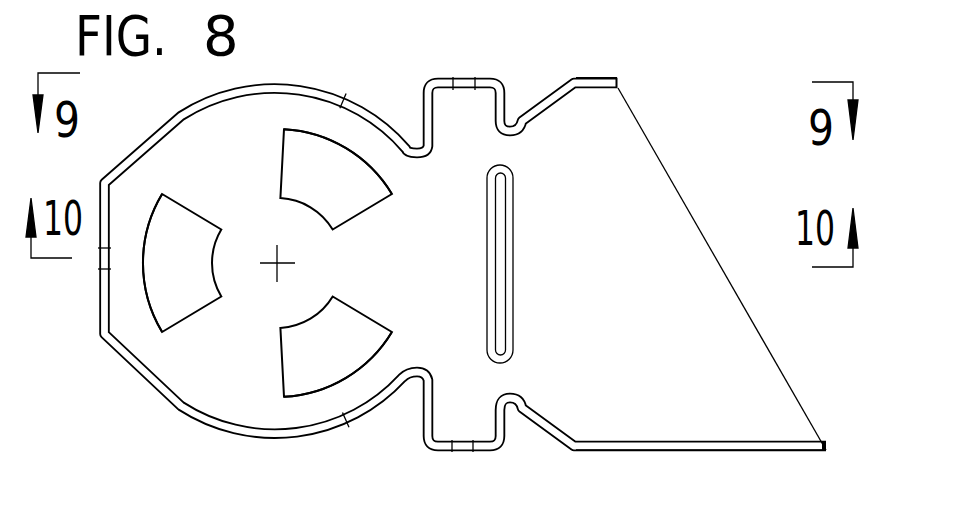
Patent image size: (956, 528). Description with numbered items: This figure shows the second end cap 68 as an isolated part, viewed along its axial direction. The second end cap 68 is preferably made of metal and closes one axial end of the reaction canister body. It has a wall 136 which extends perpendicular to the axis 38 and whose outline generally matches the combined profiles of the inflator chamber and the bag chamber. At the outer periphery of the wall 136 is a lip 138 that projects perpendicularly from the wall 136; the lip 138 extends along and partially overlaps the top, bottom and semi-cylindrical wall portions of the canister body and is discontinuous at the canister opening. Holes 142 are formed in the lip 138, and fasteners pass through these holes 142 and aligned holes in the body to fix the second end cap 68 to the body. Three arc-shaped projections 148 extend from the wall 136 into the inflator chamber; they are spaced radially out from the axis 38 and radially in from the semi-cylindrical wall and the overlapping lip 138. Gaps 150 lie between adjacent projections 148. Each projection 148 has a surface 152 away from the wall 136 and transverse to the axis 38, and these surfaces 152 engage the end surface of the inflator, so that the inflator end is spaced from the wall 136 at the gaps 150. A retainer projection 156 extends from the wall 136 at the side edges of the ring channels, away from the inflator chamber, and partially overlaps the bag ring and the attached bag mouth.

The second end cap 68 is at (295, 62).
The wall 136 is at (636, 164).
The lip 138 is at (600, 78).
The holes 142 is at (346, 93).
The arc-shaped projections 148 is at (197, 210).
The gaps 150 is at (254, 206).
The surface 152 is at (364, 181).
The retainer projection 156 is at (503, 266).
The axis 38 is at (277, 272).